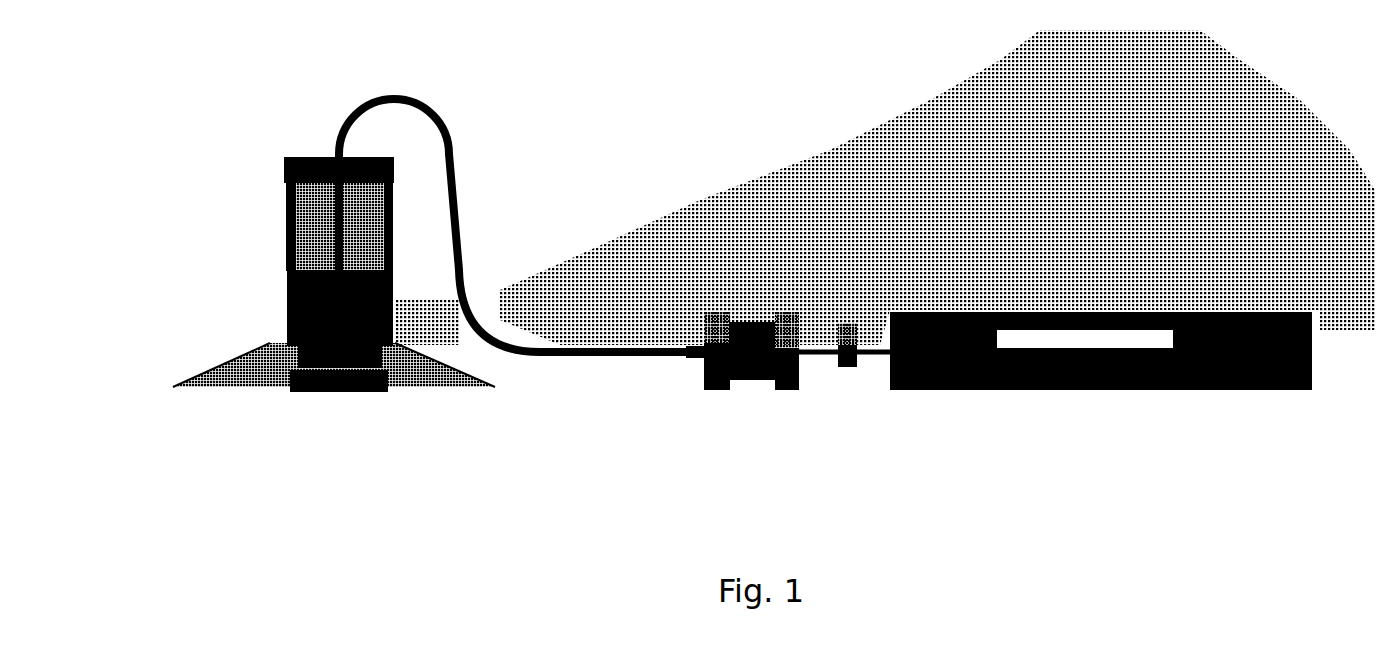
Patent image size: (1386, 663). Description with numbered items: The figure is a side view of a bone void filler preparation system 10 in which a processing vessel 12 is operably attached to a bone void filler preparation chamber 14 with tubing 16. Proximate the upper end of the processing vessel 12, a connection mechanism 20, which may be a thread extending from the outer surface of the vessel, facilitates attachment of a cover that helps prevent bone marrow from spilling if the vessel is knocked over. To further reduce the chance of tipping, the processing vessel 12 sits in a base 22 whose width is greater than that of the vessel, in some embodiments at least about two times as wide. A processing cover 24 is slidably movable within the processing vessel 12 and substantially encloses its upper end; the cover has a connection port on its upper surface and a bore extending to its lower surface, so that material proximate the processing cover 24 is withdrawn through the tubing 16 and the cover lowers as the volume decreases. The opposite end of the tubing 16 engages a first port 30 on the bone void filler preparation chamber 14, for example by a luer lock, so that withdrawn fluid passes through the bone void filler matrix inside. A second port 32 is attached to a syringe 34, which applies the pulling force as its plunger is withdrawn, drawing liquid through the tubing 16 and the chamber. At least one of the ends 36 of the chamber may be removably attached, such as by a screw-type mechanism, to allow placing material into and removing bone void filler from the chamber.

The bone void filler preparation system 10 is at (457, 480).
The processing vessel 12 is at (295, 242).
The bone void filler preparation chamber 14 is at (748, 332).
The tubing 16 is at (445, 142).
The connection mechanism 20 is at (285, 165).
The base 22 is at (462, 383).
The processing cover 24 is at (298, 298).
The first port 30 is at (688, 350).
The second port 32 is at (803, 347).
The syringe 34 is at (1050, 318).
The ends 36 is at (718, 384).